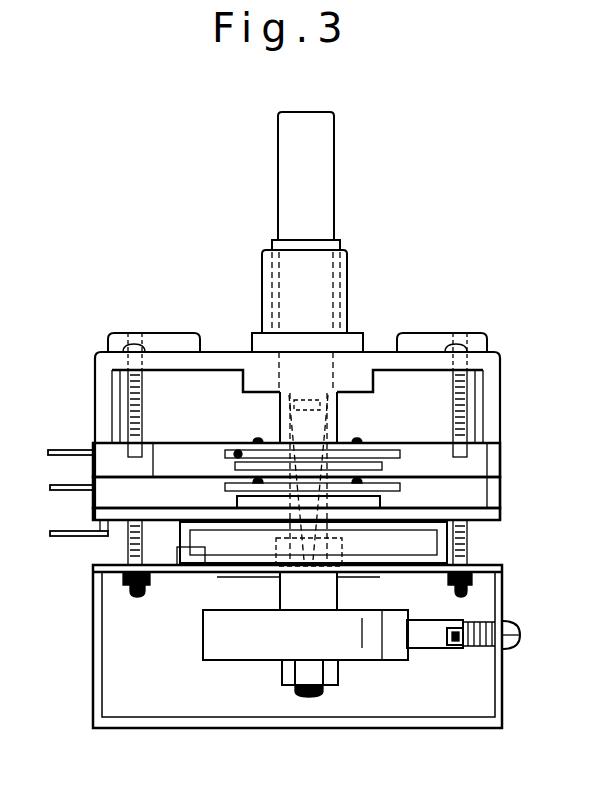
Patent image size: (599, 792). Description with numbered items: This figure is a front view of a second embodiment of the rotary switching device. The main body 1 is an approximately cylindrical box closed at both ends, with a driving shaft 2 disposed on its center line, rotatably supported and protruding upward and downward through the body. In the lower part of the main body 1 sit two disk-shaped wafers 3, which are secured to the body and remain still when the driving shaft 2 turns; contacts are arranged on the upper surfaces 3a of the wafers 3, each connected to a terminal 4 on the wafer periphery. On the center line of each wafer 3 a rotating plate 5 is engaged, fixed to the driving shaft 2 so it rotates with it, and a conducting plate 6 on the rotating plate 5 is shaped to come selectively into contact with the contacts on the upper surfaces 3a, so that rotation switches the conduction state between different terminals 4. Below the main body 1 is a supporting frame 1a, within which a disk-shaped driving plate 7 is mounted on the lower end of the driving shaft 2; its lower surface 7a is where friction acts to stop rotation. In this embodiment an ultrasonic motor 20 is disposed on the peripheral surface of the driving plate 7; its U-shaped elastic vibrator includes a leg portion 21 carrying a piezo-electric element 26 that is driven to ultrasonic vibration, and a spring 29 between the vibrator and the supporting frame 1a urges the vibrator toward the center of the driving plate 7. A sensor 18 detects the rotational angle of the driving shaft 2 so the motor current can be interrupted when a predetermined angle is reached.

The main body of the device 1 is at (490, 358).
The supporting frame 1a is at (435, 728).
The driving shaft 2 is at (310, 196).
The wafers 3 is at (470, 462).
The upper surfaces of the wafers 3a is at (153, 475).
The terminals 4 is at (58, 450).
The rotating plate 5 is at (365, 480).
The conducting plate 6 is at (215, 468).
The driving plate 7 is at (250, 632).
The lower surface of the driving plate 7a is at (370, 660).
The sensor 18 is at (430, 543).
The ultrasonic motor 20 is at (450, 658).
The leg portion 21 is at (430, 633).
The piezo-electric element 26 is at (497, 668).
The spring 29 is at (478, 622).